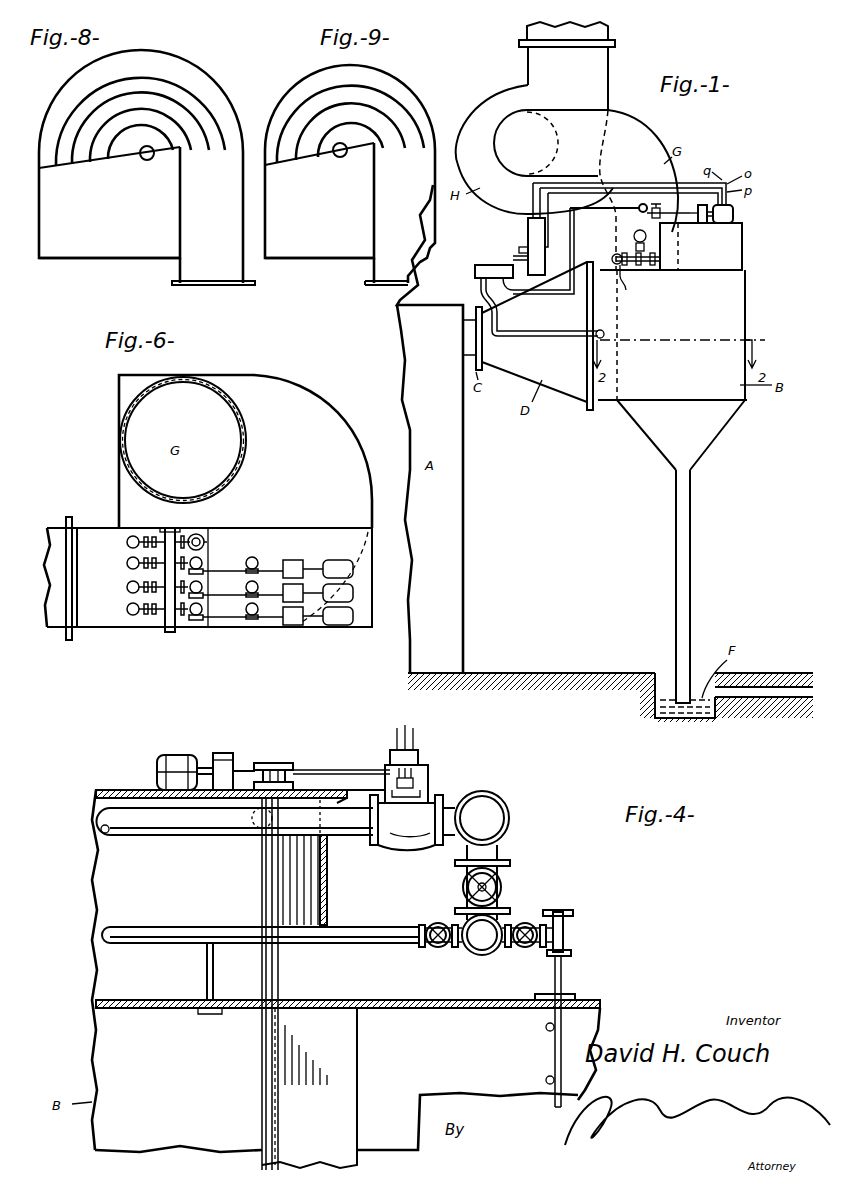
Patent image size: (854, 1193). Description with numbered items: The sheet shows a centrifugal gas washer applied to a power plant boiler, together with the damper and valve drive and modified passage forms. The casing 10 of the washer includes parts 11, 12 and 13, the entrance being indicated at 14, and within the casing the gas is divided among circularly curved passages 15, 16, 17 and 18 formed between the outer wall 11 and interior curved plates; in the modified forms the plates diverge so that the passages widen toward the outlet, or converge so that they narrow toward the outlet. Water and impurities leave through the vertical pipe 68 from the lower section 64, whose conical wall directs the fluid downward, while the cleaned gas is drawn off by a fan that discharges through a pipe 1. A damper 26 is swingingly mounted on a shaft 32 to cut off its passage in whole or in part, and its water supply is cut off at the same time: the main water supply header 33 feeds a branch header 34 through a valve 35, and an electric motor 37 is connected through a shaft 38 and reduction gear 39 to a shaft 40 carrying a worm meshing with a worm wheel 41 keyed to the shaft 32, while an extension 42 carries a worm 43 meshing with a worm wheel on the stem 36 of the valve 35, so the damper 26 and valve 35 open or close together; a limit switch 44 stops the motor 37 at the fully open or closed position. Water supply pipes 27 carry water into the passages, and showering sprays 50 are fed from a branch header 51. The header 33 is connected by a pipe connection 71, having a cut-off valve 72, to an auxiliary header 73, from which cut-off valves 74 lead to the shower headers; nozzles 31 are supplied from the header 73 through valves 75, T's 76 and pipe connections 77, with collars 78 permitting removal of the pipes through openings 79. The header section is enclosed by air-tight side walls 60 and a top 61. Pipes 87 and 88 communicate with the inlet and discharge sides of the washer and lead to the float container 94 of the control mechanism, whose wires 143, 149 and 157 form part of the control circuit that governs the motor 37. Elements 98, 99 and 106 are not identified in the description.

In FIG. 1, the stack 1 is at (608, 31).
In FIG. 8, the casing 10 is at (62, 84).
In FIG. 9, the casing 10 is at (308, 76).
In FIG. 1, the casing 10 is at (745, 314).
In FIG. 6, the casing 10 is at (324, 400).
In FIG. 4, the casing 10 is at (94, 1052).
In FIG. 8, the outer wall 11 is at (221, 90).
In FIG. 9, the outer wall 11 is at (412, 99).
In FIG. 8, the casing part 12 is at (58, 262).
In FIG. 9, the casing part 12 is at (284, 262).
In FIG. 6, the casing part 12 is at (119, 470).
In FIG. 8, the casing part 13 is at (178, 273).
In FIG. 9, the casing part 13 is at (372, 271).
In FIG. 6, the casing part 13 is at (88, 530).
In FIG. 8, the entrance 14 is at (172, 287).
In FIG. 9, the entrance 14 is at (378, 285).
In FIG. 6, the entrance 14 is at (68, 642).
In FIG. 8, the gas passage 15 is at (232, 121).
In FIG. 9, the gas passage 15 is at (424, 128).
In FIG. 8, the gas passage 16 is at (210, 152).
In FIG. 9, the gas passage 16 is at (402, 152).
In FIG. 8, the gas passage 17 is at (200, 160).
In FIG. 9, the gas passage 17 is at (388, 158).
In FIG. 8, the gas passage 18 is at (158, 154).
In FIG. 9, the gas passage 18 is at (353, 151).
In FIG. 4, the damper 26 is at (352, 1056).
In FIG. 4, the water supply pipe 27 is at (260, 878).
In FIG. 4, the nozzle 31 is at (545, 1080).
In FIG. 4, the shaft 32 is at (280, 889).
In FIG. 1, the main water supply header 33 is at (633, 230).
In FIG. 6, the main water supply header 33 is at (166, 633).
In FIG. 4, the main water supply header 33 is at (495, 815).
In FIG. 4, the branch header 34 is at (142, 836).
In FIG. 6, the valve 35 is at (205, 550).
In FIG. 4, the valve 35 is at (402, 847).
In FIG. 4, the stem 36 is at (428, 780).
In FIG. 1, the electric motor 37 is at (725, 223).
In FIG. 6, the electric motor 37 is at (353, 569).
In FIG. 4, the electric motor 37 is at (160, 763).
In FIG. 6, the shaft 38 is at (316, 566).
In FIG. 4, the shaft 38 is at (207, 766).
In FIG. 1, the reduction gear 39 is at (702, 205).
In FIG. 6, the reduction gear 39 is at (292, 642).
In FIG. 4, the reduction gear 39 is at (232, 758).
In FIG. 4, the shaft 40 is at (254, 770).
In FIG. 6, the worm wheel 41 is at (254, 560).
In FIG. 4, the worm wheel 41 is at (282, 765).
In FIG. 6, the extension 42 is at (232, 566).
In FIG. 4, the extension 42 is at (322, 771).
In FIG. 6, the worm 43 is at (203, 575).
In FIG. 4, the worm 43 is at (397, 781).
In FIG. 1, the limit switch 44 is at (660, 206).
In FIG. 4, the limit switch 44 is at (418, 758).
In FIG. 4, the showering spray 50 is at (205, 1016).
In FIG. 4, the branch header 51 is at (176, 928).
In FIG. 1, the side wall 60 is at (745, 246).
In FIG. 4, the side wall 60 is at (94, 900).
In FIG. 4, the top 61 is at (122, 790).
In FIG. 1, the lower section 64 is at (706, 445).
In FIG. 1, the vertical pipe 68 is at (676, 570).
In FIG. 4, the pipe connection 71 is at (512, 864).
In FIG. 1, the cut-off valve 72 is at (631, 242).
In FIG. 4, the cut-off valve 72 is at (462, 888).
In FIG. 4, the auxiliary header 73 is at (500, 925).
In FIG. 4, the cut-off valve 74 is at (433, 948).
In FIG. 6, the valve 75 is at (130, 616).
In FIG. 4, the valve 75 is at (524, 948).
In FIG. 1, the T 76 is at (614, 256).
In FIG. 6, the T 76 is at (128, 584).
In FIG. 4, the T 76 is at (565, 934).
In FIG. 1, the pipe connection 77 is at (632, 280).
In FIG. 4, the pipe connection 77 is at (563, 975).
In FIG. 4, the collar 78 is at (576, 1000).
In FIG. 4, the opening 79 is at (548, 1010).
In FIG. 1, the pipe 87 is at (516, 340).
In FIG. 1, the pipe connection 88 is at (530, 297).
In FIG. 1, the container 94 is at (475, 273).
In FIG. 1, the pipe 98 is at (513, 259).
In FIG. 1, the pipe 99 is at (519, 251).
In FIG. 1, the cylinder 106 is at (528, 239).
In FIG. 4, the wire 143 is at (406, 722).
In FIG. 4, the wire 149 is at (394, 733).
In FIG. 4, the wire 157 is at (416, 733).